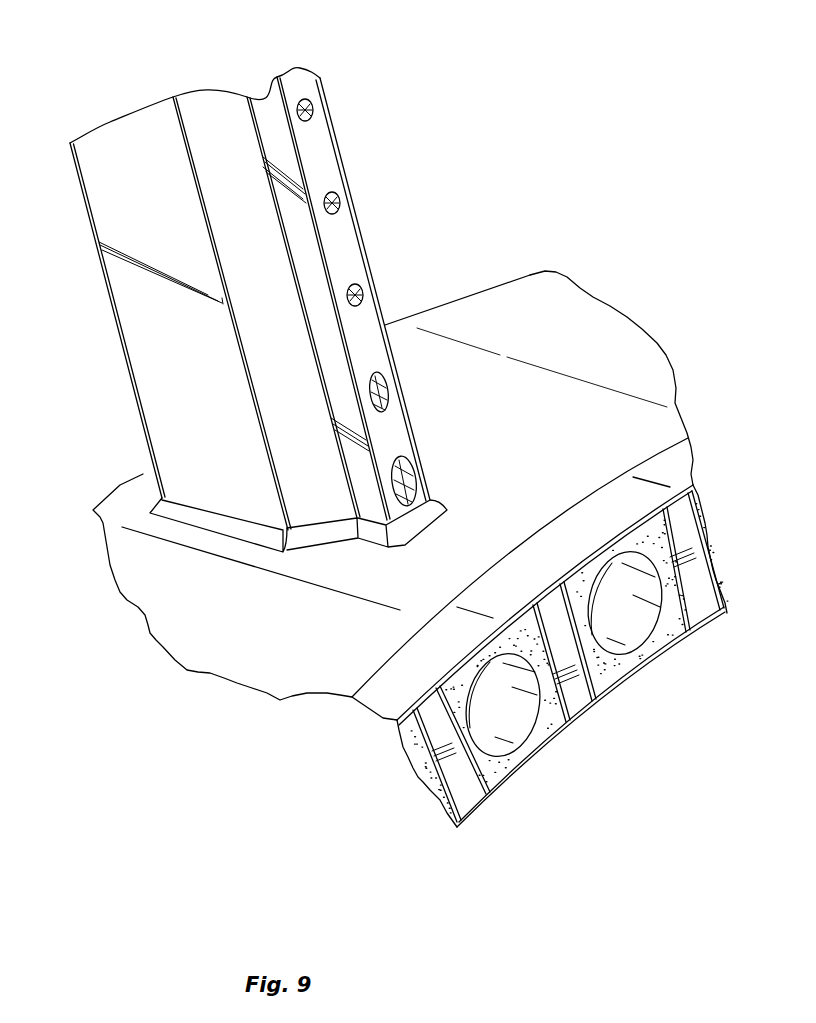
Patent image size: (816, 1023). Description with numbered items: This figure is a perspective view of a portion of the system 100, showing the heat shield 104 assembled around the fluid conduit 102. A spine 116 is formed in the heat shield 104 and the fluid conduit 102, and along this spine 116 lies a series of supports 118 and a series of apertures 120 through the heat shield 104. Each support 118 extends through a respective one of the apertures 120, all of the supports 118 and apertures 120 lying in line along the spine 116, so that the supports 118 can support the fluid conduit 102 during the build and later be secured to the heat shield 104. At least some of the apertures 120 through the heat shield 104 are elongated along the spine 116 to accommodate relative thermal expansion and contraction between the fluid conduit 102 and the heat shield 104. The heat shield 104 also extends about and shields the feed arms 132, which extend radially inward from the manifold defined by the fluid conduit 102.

The system 100 is at (455, 118).
The fluid conduit 102 is at (195, 105).
The heat shield 104 is at (130, 130).
The spine 116 is at (352, 242).
The supports 118 is at (317, 100).
The apertures 120 is at (375, 363).
The feed arms 132 is at (354, 168).